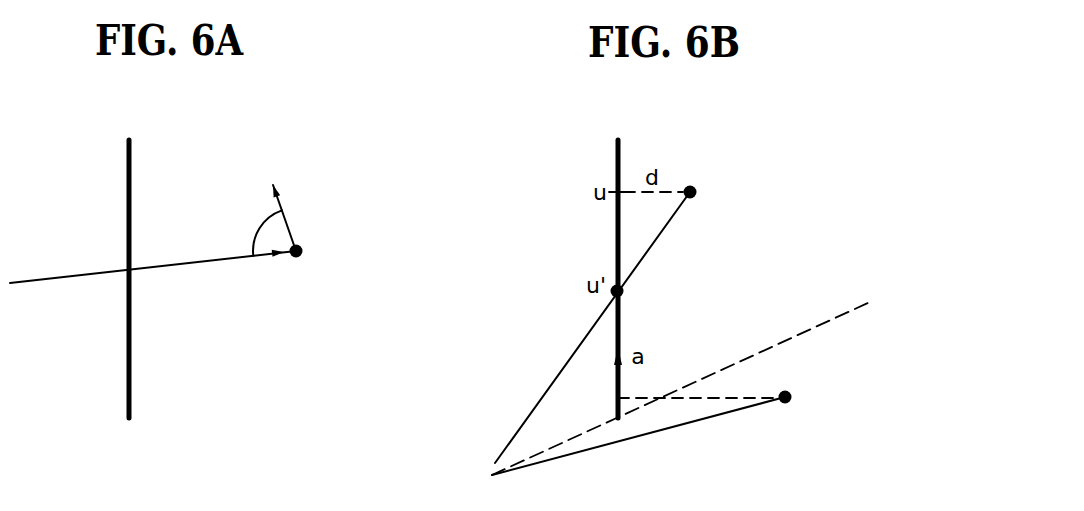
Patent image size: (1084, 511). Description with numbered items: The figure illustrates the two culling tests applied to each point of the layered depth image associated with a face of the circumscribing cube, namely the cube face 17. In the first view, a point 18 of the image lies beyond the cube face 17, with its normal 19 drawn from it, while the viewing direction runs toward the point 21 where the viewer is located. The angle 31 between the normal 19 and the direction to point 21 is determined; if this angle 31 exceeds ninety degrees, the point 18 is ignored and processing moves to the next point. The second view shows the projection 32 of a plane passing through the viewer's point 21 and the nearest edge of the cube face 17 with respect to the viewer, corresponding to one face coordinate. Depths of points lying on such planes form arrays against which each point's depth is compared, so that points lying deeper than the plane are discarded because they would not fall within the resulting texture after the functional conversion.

In FIG. 6A, the cube face 17 is at (127, 165).
In FIG. 6B, the cube face 17 is at (615, 162).
In FIG. 6A, the point 18 is at (304, 258).
In FIG. 6A, the normal 19 is at (289, 227).
In FIG. 6A, the point where the viewer is located 21 is at (56, 281).
In FIG. 6B, the point where the viewer is located 21 is at (486, 462).
In FIG. 6A, the angle 31 is at (258, 232).
In FIG. 6B, the projection 32 is at (810, 326).